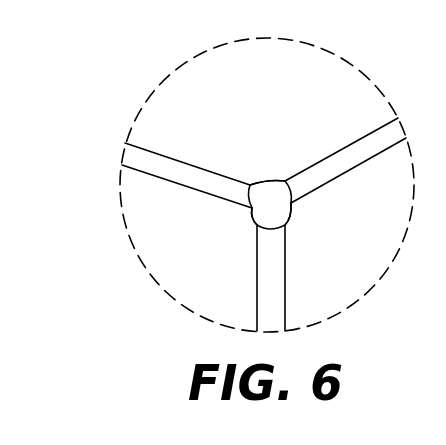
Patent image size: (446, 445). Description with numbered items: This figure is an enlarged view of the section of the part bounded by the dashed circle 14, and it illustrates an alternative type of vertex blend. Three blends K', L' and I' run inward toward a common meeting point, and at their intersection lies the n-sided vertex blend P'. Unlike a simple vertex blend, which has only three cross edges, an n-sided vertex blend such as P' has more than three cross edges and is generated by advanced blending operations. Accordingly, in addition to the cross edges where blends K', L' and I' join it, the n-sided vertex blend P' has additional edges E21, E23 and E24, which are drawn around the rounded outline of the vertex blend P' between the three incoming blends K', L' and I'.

The circle 14 is at (160, 289).
The n-sided vertex blend P' is at (269, 205).
The blend K' is at (187, 182).
The blend L' is at (345, 169).
The blend I' is at (271, 278).
The additional edge E21 is at (253, 209).
The additional edge E23 is at (268, 183).
The additional edge E24 is at (293, 208).